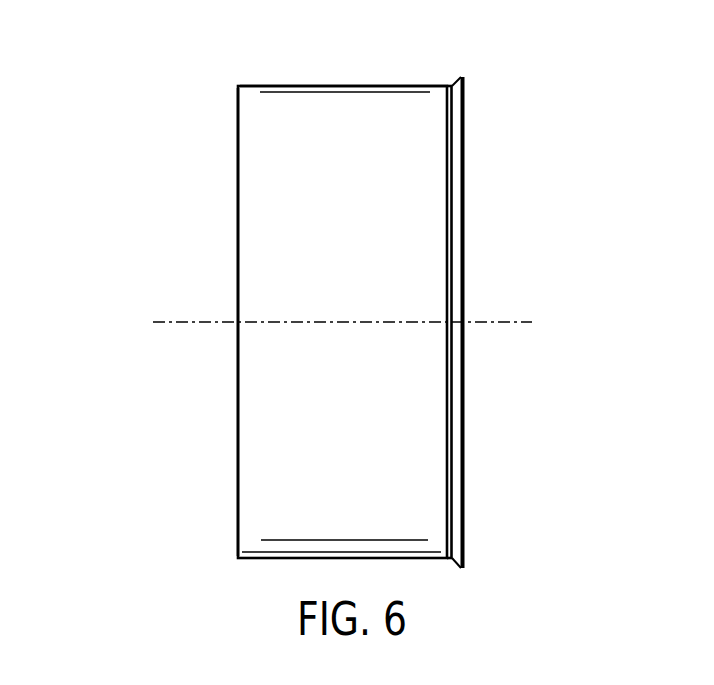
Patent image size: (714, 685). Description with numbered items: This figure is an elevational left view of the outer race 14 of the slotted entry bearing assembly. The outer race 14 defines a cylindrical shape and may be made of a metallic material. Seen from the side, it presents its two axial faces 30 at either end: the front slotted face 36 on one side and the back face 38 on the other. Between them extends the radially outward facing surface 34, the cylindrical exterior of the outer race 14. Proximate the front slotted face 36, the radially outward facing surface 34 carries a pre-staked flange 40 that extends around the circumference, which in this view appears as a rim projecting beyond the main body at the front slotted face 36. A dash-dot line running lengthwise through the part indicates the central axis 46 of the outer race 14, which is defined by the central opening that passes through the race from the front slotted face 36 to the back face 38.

The outer race 14 is at (127, 76).
The axial faces 30 is at (238, 493).
The radially outward facing surface 34 is at (343, 86).
The front slotted face 36 is at (463, 138).
The back face 38 is at (238, 139).
The pre-staked flange 40 is at (460, 569).
The central axis 46 is at (503, 322).